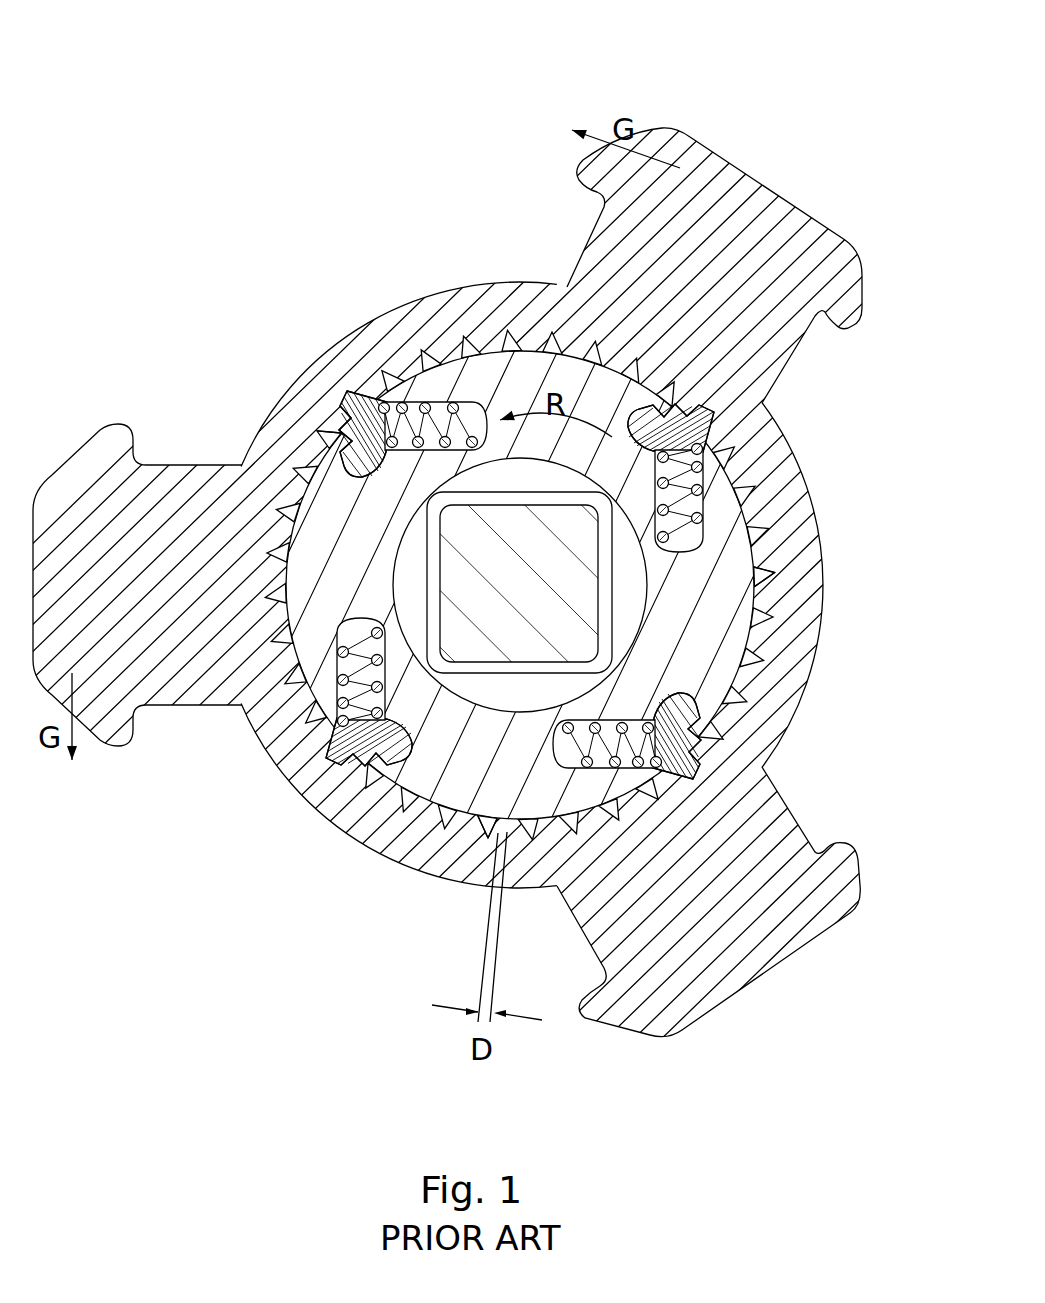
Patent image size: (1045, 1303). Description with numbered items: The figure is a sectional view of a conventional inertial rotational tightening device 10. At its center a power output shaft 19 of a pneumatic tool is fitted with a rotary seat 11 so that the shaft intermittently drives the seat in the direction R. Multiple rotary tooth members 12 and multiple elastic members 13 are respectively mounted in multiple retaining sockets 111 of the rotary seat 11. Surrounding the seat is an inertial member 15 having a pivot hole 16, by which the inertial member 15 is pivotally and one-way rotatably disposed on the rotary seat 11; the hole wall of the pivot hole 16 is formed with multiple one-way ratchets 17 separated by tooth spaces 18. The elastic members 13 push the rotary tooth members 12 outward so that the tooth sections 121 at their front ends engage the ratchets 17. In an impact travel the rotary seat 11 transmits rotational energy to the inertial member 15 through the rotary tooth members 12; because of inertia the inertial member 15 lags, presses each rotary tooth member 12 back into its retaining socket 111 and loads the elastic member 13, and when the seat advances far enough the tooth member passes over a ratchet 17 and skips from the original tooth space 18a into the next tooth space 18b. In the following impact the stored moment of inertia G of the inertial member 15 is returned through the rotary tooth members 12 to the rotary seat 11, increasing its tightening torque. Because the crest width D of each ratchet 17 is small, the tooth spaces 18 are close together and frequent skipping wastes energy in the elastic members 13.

The rotational tightening device 10 is at (228, 118).
The rotary seat 11 is at (327, 541).
The retaining socket 111 is at (355, 560).
The rotary tooth member 12 is at (335, 436).
The tooth section 121 is at (350, 437).
The elastic member 13 is at (442, 400).
The inertial member 15 is at (490, 305).
The pivot hole 16 is at (772, 556).
The one-way ratchet 17 is at (358, 393).
The tooth space 18 is at (388, 400).
The original tooth space 18a is at (338, 403).
The next tooth space 18b is at (318, 445).
The power output shaft 19 is at (578, 627).